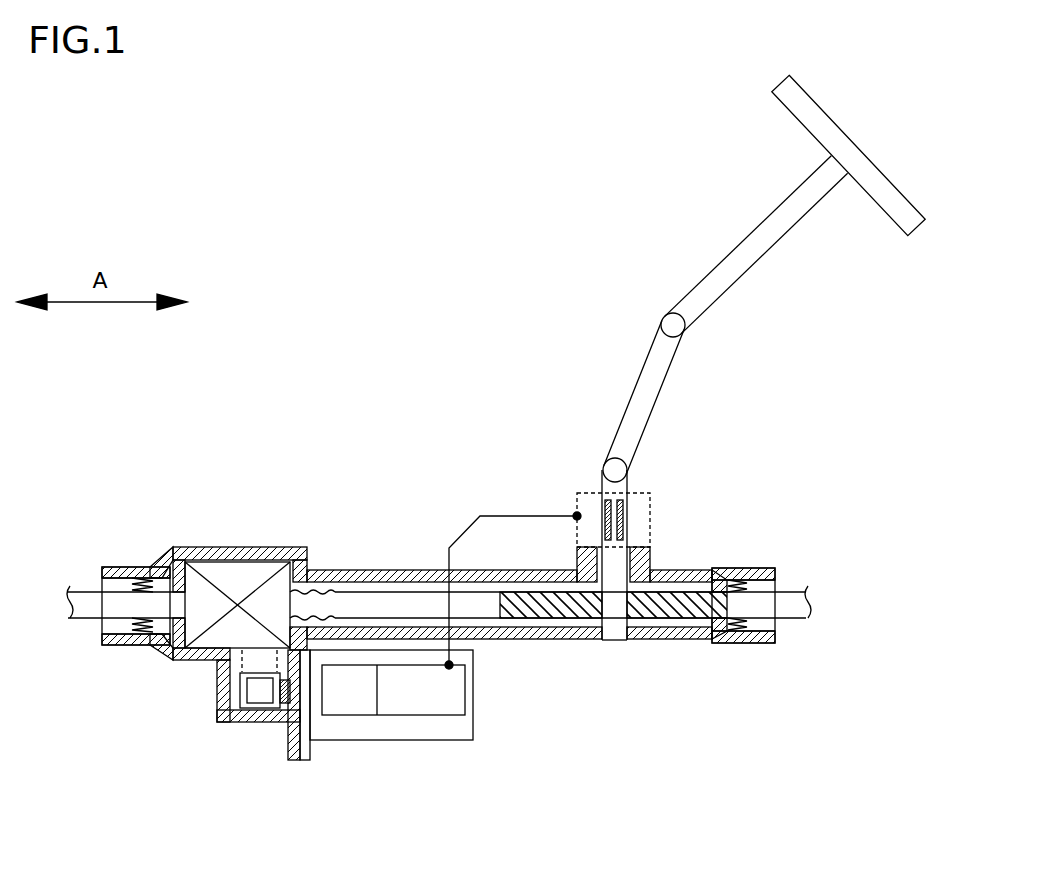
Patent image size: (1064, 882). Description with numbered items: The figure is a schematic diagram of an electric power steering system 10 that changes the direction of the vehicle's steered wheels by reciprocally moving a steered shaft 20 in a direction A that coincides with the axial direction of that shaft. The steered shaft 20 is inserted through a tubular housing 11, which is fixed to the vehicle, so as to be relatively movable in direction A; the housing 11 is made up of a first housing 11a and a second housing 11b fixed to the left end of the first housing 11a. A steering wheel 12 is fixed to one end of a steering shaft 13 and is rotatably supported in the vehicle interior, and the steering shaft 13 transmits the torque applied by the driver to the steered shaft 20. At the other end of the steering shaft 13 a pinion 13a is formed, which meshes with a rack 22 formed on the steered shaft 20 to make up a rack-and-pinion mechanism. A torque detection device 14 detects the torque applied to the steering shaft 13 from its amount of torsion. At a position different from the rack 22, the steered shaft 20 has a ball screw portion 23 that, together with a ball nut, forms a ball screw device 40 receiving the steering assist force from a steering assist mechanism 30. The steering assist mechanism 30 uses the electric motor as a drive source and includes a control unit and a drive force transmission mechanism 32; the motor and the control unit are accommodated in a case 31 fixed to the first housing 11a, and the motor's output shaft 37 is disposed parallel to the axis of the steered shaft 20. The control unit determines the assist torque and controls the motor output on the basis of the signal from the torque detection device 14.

The electric power steering system 10 is at (352, 374).
The housing 11 is at (427, 572).
The first housing 11a is at (403, 572).
The second housing 11b is at (287, 547).
The steering wheel 12 is at (830, 112).
The steering shaft 13 is at (607, 486).
The pinion 13a is at (616, 612).
The torque detection device 14 is at (653, 518).
The steered shaft 20 is at (363, 580).
The rack 22 is at (576, 605).
The ball screw portion 23 is at (312, 610).
The steering assist mechanism 30 is at (242, 720).
The case 31 is at (407, 742).
The drive force transmission mechanism 32 is at (237, 662).
The output shaft 37 is at (285, 695).
The ball screw device 40 is at (217, 563).